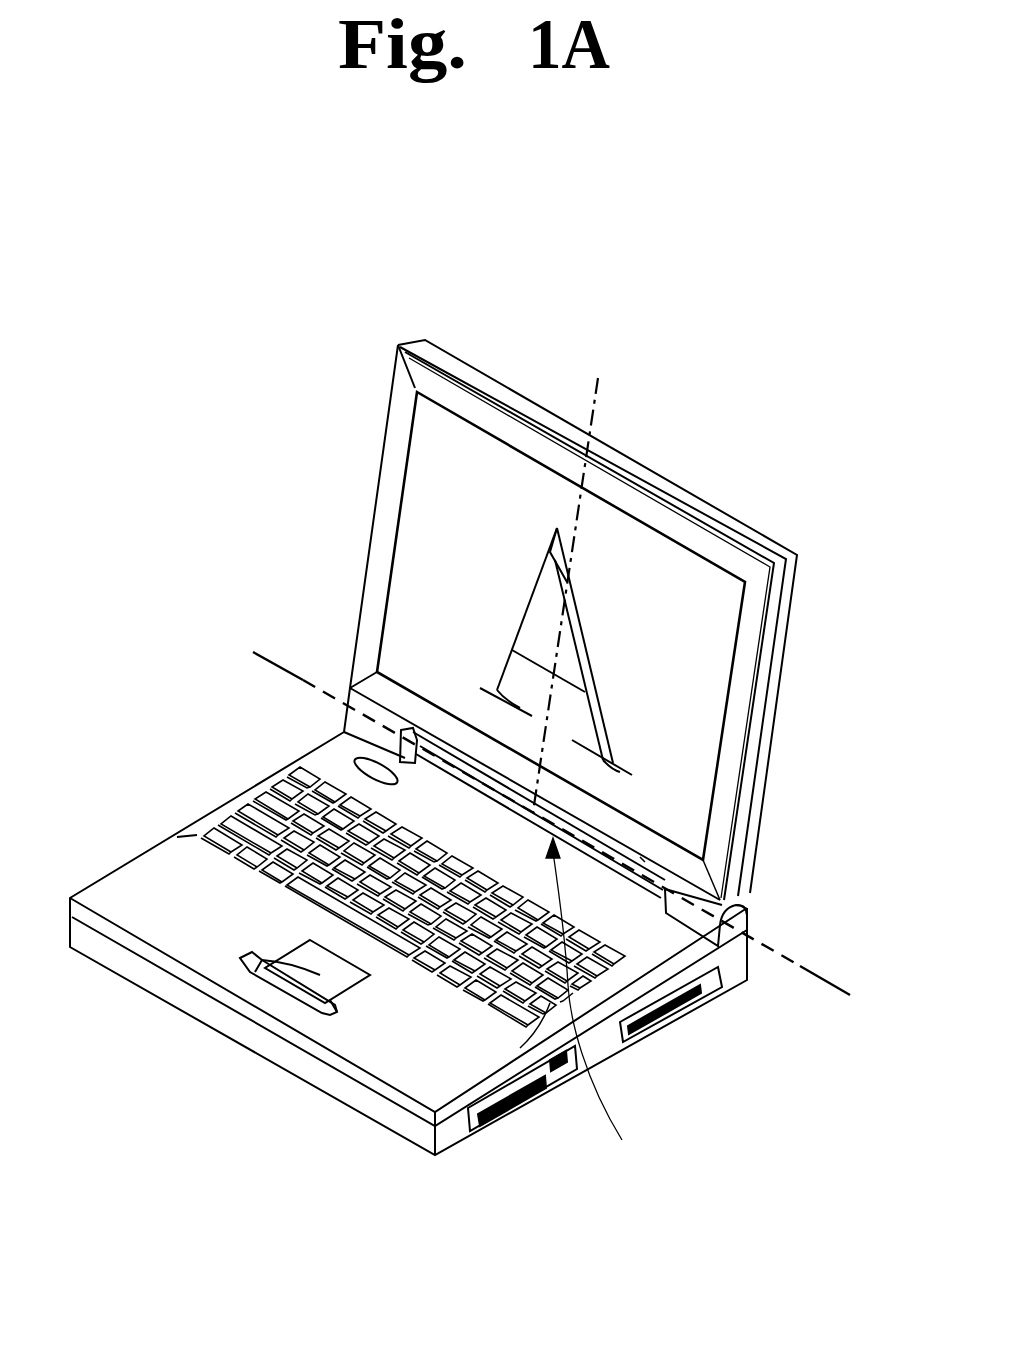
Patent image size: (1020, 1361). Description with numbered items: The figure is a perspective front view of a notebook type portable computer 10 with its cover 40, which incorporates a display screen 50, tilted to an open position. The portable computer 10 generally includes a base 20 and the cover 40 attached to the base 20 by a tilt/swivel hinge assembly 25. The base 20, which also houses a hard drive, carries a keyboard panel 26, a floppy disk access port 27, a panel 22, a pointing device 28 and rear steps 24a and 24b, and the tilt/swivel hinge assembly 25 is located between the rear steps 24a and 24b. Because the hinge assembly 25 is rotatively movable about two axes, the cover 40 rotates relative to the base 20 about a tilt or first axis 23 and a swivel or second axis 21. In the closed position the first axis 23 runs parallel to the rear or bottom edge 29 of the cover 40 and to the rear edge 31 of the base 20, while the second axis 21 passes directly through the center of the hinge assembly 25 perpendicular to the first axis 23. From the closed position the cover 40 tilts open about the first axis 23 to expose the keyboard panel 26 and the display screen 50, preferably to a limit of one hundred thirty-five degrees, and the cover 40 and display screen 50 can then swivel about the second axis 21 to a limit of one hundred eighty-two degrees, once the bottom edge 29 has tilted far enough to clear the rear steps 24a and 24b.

The portable computer 10 is at (139, 412).
The base 20 is at (150, 822).
The swivel axis or second axis 21 is at (573, 575).
The panel 22 is at (393, 1065).
The tilt axis or first axis 23 is at (573, 840).
The rear step 24a is at (400, 735).
The rear step 24b is at (717, 957).
The tilt/swivel hinge assembly 25 is at (612, 985).
The keyboard panel 26 is at (600, 1007).
The floppy disk access port 27 is at (500, 1117).
The pointing device 28 is at (257, 978).
The rear or bottom edge of the display cover 29 is at (640, 857).
The rear edge of the base 31 is at (750, 907).
The cover 40 is at (357, 486).
The display screen 50 is at (673, 644).